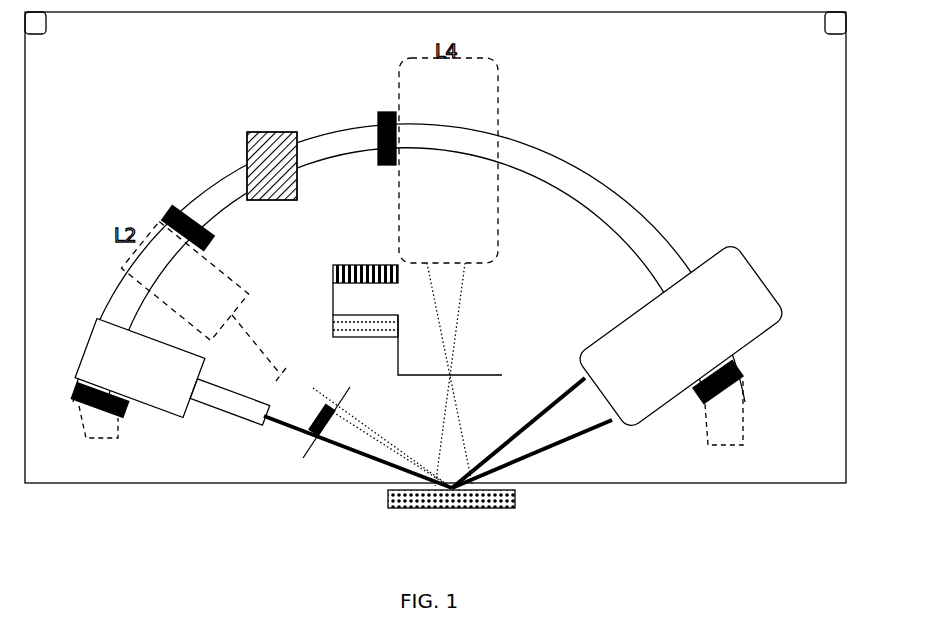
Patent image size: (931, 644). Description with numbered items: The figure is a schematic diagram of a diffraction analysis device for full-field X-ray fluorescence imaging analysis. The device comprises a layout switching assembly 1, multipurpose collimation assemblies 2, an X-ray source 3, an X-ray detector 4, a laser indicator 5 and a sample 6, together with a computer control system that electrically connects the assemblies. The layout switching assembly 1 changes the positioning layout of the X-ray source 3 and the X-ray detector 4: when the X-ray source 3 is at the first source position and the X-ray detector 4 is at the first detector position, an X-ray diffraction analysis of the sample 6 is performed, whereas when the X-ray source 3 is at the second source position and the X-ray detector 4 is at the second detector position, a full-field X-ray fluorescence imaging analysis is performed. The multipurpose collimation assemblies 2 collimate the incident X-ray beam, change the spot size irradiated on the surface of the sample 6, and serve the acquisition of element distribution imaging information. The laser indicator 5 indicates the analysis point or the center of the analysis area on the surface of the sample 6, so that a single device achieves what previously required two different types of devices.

The layout switching assembly 1 is at (376, 118).
The multipurpose collimation assemblies 2 is at (427, 372).
The X-ray source 3 is at (144, 411).
The X-ray detector 4 is at (670, 414).
The laser indicator 5 is at (435, 247).
The sample 6 is at (517, 498).